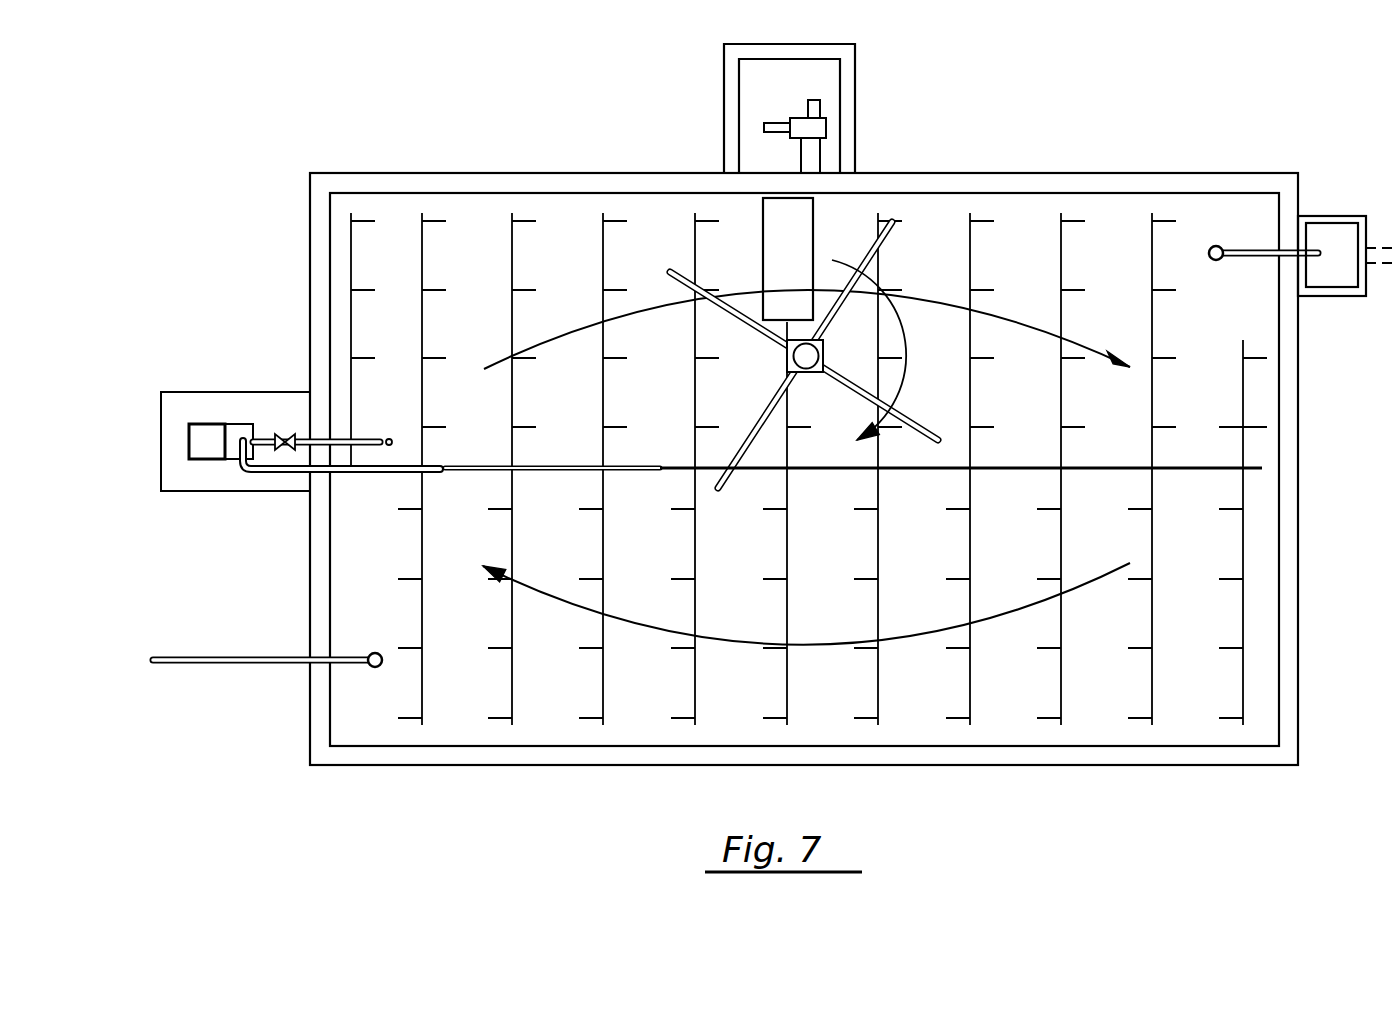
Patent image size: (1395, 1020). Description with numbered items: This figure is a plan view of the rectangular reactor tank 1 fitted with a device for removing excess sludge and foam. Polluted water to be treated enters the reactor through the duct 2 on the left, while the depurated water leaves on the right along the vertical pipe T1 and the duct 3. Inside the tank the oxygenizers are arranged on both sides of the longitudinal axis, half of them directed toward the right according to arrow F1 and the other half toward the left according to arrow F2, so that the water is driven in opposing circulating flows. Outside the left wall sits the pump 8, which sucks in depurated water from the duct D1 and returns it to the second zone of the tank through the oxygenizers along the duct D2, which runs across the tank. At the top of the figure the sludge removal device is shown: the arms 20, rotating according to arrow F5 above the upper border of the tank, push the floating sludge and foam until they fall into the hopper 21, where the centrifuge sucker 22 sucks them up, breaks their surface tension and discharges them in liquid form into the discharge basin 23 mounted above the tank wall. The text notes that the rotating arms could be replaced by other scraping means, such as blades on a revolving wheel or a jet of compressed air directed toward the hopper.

The tank 1 is at (1140, 178).
The duct 2 is at (250, 663).
The duct 3 is at (1248, 255).
The pump 8 is at (202, 438).
The arms 20 is at (868, 262).
The hopper 21 is at (778, 242).
The centrifuge sucker 22 is at (817, 125).
The discharge basin 23 is at (763, 80).
The duct D1 is at (363, 437).
The duct D2 is at (278, 470).
The vertical pipe T1 is at (1218, 247).
The arrow F1 is at (807, 329).
The arrow F2 is at (788, 587).
The arrow F5 is at (857, 364).